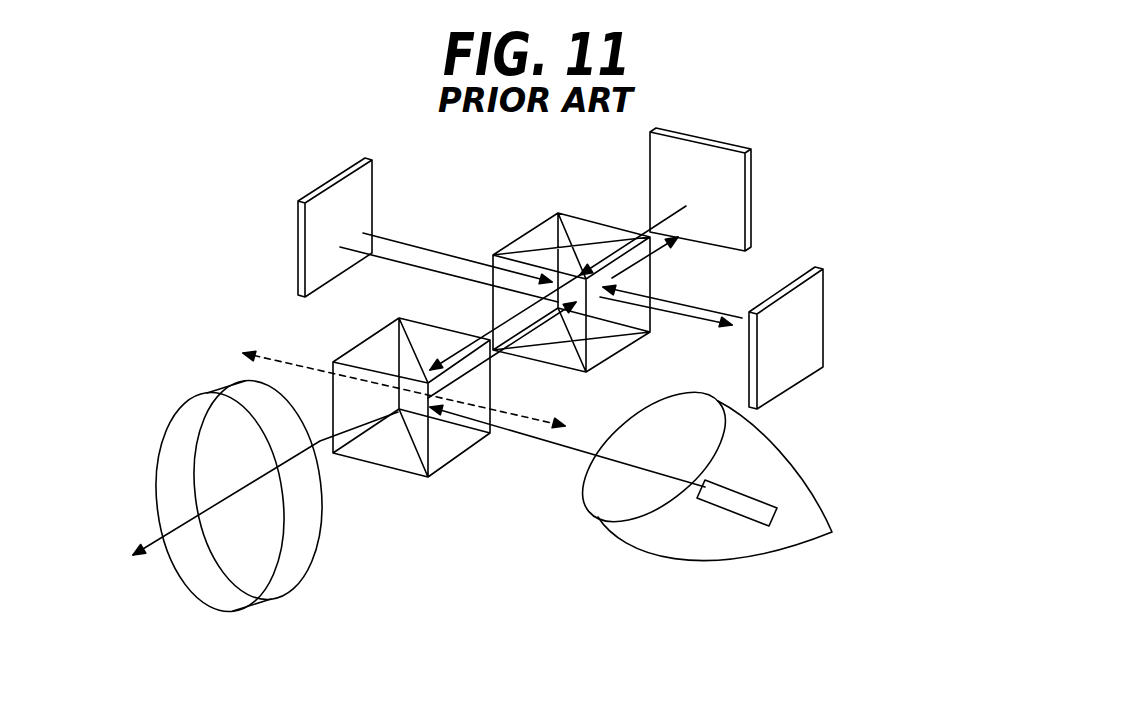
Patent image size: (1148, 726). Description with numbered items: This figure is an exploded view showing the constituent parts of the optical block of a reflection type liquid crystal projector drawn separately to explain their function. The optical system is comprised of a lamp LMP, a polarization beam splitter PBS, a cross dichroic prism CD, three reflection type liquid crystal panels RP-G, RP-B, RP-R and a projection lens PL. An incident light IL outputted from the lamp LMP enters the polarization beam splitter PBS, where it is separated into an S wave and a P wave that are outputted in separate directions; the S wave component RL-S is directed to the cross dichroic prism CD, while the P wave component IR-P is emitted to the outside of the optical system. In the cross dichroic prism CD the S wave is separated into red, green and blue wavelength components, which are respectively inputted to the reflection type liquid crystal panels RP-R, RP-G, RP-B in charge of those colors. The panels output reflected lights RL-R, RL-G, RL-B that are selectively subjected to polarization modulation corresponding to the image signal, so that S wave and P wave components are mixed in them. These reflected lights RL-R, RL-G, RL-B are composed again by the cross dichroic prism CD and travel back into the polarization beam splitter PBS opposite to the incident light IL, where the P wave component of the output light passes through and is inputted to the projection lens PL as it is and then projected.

The reflection type liquid crystal panel for green RP-G is at (318, 186).
The reflected light of green RL-G is at (423, 249).
The cross dichroic prism CD is at (545, 222).
The reflected light of blue RL-B is at (665, 218).
The reflection type liquid crystal panel for blue RP-B is at (727, 137).
The reflected light of red RL-R is at (687, 302).
The reflection type liquid crystal panel for red RP-R is at (813, 338).
The P-polarized illumination light component IR-P is at (255, 354).
The S-polarized reading light beam RL-S is at (557, 427).
The polarization beam splitter PBS is at (387, 468).
The incident light IL is at (526, 437).
The projection lens PL is at (305, 578).
The lamp LMP is at (630, 551).